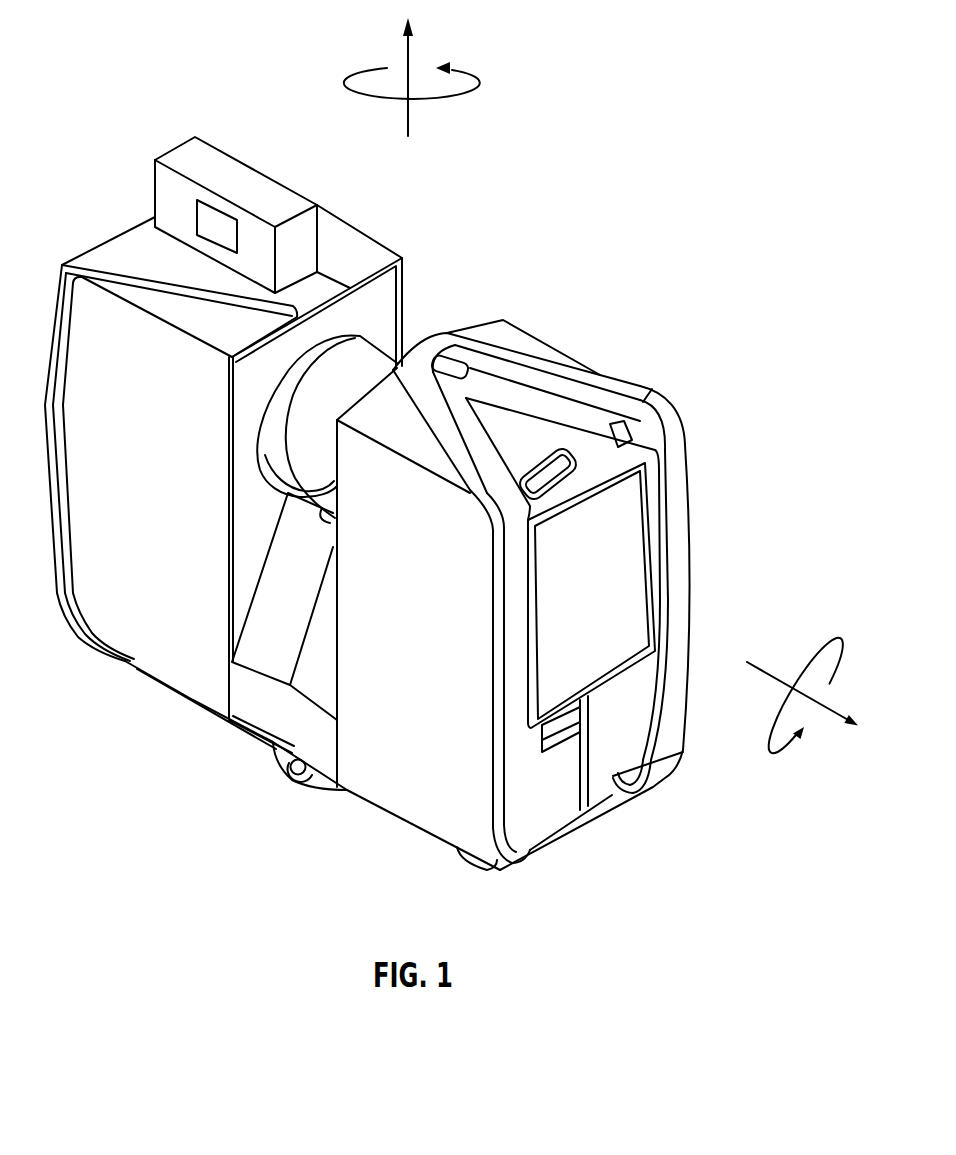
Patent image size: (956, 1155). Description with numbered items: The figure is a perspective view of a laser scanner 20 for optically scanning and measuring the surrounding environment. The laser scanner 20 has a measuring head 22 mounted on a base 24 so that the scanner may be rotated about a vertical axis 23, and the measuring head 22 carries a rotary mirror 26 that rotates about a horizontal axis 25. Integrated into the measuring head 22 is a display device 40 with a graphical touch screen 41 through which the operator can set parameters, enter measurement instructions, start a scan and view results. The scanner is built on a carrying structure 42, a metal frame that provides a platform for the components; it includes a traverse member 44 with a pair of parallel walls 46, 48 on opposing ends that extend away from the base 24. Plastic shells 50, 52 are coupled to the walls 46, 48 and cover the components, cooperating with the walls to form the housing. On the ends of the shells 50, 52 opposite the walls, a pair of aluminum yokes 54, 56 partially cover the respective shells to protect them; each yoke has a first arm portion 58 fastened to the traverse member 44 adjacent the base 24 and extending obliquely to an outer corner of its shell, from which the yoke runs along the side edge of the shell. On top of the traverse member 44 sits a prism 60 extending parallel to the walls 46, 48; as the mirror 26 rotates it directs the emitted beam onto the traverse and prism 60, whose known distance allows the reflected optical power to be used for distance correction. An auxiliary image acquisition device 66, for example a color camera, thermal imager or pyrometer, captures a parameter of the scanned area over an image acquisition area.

The laser scanner 20 is at (146, 50).
The measuring head 22 is at (597, 283).
The vertical axis 23 is at (411, 58).
The base 24 is at (302, 790).
The horizontal axis 25 is at (823, 700).
The rotary mirror 26 is at (343, 366).
The display device 40 is at (714, 566).
The graphical touch screen 41 is at (627, 543).
The carrying structure 42 is at (158, 732).
The traverse member 44 is at (322, 742).
The wall 46 is at (487, 318).
The wall 48 is at (384, 289).
The shell 50 is at (86, 532).
The shell 52 is at (422, 773).
The yoke 54 is at (646, 400).
The yoke 56 is at (110, 252).
The first arm portion 58 is at (88, 647).
The prism 60 is at (273, 513).
The auxiliary image acquisition device 66 is at (178, 146).